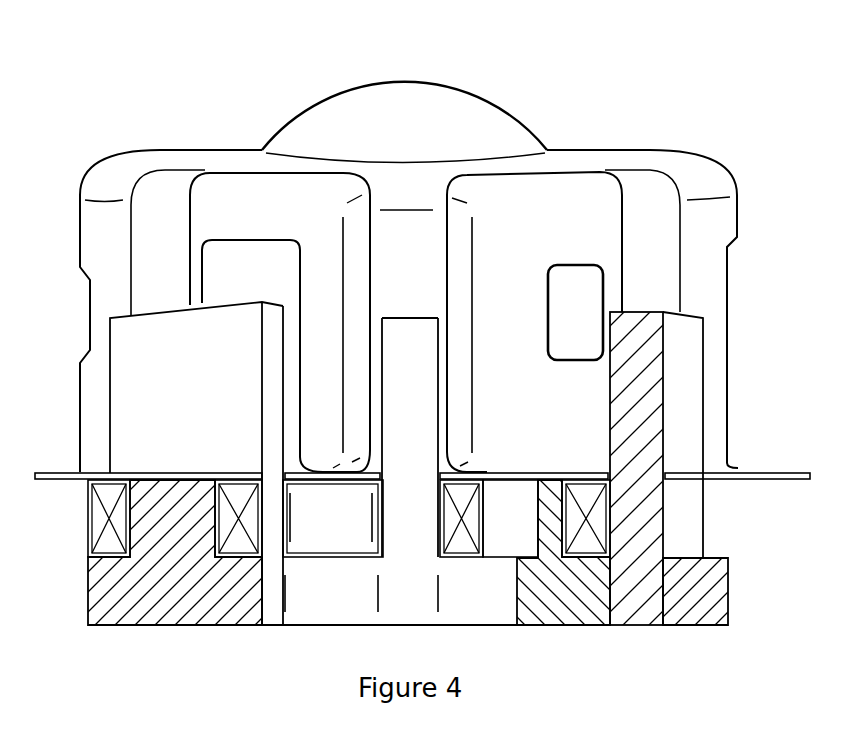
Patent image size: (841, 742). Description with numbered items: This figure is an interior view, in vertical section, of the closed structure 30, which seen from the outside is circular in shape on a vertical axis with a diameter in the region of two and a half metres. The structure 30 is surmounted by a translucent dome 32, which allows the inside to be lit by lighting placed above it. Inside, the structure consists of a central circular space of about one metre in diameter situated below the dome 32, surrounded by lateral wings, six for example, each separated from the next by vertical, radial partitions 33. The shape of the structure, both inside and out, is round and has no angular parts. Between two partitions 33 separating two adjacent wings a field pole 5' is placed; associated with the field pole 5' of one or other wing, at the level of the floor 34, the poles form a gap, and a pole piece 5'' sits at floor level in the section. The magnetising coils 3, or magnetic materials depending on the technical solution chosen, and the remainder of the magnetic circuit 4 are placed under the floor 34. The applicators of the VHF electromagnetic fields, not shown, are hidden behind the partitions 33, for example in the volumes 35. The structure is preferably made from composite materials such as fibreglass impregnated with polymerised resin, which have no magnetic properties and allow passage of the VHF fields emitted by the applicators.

The circular structure 30 is at (595, 148).
The translucent dome 32 is at (315, 98).
The vertical radial partition 33 is at (357, 287).
The volume 35 is at (413, 235).
The field pole 5' is at (404, 439).
The pole plate 5'' is at (316, 444).
The floor 34 is at (758, 472).
The magnetising coil 3 is at (93, 532).
The magnetic circuit 4 is at (98, 603).